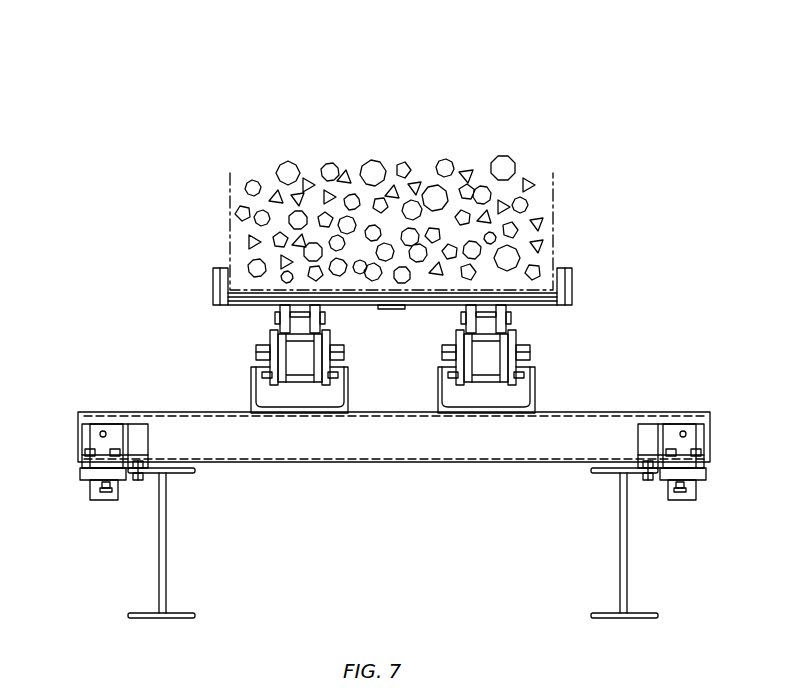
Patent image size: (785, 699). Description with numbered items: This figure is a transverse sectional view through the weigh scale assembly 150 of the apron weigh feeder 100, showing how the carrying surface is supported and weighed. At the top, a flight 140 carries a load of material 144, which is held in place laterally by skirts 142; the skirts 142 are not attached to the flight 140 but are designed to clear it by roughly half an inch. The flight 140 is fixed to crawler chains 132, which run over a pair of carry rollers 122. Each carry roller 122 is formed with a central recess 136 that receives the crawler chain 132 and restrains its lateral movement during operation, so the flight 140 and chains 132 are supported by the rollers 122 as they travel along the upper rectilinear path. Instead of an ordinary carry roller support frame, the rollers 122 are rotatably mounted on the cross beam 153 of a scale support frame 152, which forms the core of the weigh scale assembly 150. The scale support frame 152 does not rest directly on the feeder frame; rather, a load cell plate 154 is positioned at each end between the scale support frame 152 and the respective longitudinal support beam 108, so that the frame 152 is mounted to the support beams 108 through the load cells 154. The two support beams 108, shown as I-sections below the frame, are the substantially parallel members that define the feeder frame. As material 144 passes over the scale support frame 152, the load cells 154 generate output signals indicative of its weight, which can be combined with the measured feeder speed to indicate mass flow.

The apron weigh feeder 100 is at (213, 142).
The support beam 108 is at (160, 618).
The carry roller 122 is at (276, 327).
The crawler chain 132 is at (275, 312).
The central recess 136 is at (290, 401).
The flight 140 is at (212, 291).
The skirt 142 is at (556, 215).
The material 144 is at (514, 160).
The weigh scale assembly 150 is at (673, 399).
The scale support frame 152 is at (80, 412).
The cross beam 153 is at (417, 462).
The load cell plate 154 is at (78, 460).